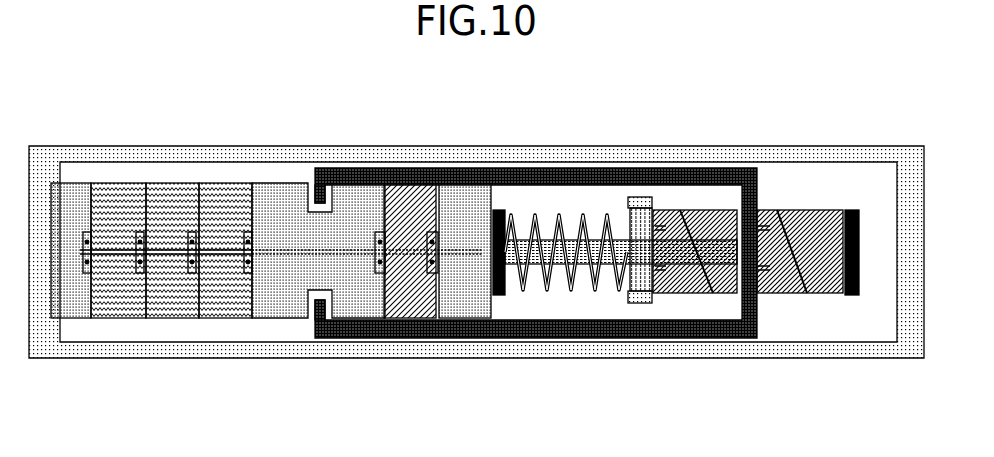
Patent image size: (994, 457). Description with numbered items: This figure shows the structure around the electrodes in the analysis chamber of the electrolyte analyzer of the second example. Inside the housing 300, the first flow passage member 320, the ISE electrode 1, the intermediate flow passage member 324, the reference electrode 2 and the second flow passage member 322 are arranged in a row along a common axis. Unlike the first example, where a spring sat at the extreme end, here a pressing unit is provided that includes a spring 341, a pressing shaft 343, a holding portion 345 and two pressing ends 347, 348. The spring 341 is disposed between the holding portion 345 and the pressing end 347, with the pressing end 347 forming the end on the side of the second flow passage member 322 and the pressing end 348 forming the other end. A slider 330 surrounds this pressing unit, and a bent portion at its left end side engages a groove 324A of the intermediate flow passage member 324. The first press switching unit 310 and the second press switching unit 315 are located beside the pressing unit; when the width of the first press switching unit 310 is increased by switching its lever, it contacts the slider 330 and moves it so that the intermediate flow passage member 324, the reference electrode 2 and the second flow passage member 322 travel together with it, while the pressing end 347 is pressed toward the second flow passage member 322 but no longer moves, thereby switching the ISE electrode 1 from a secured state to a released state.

The ISE electrode 1 is at (150, 346).
The reference electrode 2 is at (405, 305).
The housing 300 is at (157, 158).
The first press switching unit 310 is at (693, 210).
The second press switching unit 315 is at (780, 293).
The first flow passage member 320 is at (73, 310).
The second flow passage member 322 is at (465, 308).
The intermediate flow passage member 324 is at (252, 310).
The groove 324A is at (307, 178).
The slider 330 is at (402, 170).
The spring 341 is at (553, 210).
The pressing shaft 343 is at (590, 290).
The holding portion 345 is at (628, 197).
The pressing end 347 is at (498, 298).
The pressing end 348 is at (845, 295).